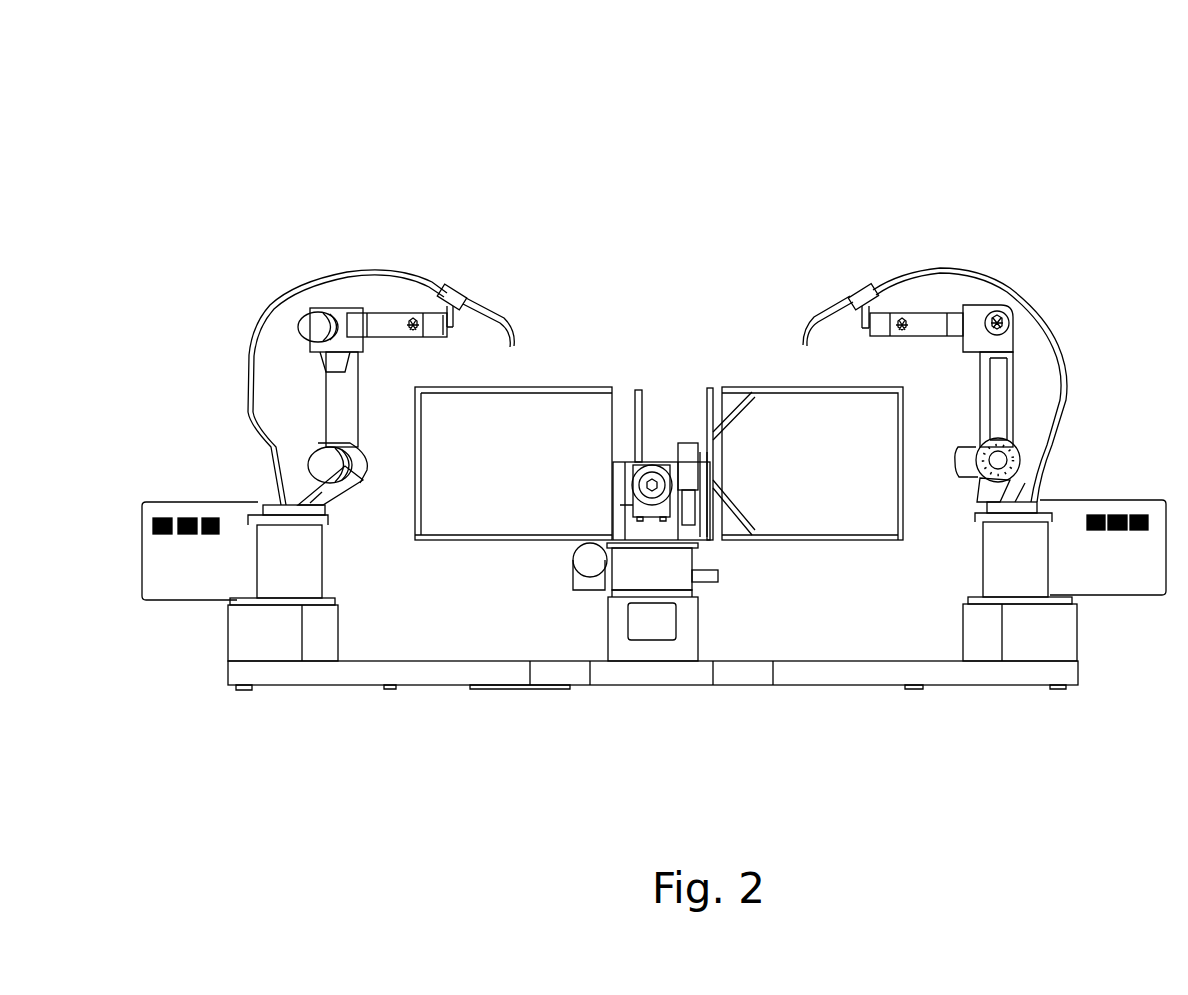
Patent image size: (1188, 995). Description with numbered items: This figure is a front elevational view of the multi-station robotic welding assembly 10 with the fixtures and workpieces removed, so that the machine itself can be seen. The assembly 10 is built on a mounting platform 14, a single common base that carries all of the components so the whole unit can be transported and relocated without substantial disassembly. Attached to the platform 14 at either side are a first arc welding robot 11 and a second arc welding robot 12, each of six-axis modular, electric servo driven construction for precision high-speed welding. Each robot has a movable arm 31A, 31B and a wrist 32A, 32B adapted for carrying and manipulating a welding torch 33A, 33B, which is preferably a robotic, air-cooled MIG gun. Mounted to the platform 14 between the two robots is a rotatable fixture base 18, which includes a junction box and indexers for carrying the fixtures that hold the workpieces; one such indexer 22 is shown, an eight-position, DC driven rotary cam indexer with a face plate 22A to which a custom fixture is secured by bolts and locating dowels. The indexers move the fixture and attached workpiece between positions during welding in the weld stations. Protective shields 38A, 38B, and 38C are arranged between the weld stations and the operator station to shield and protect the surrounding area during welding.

The multi-station robotic welding assembly 10 is at (740, 264).
The first arc welding robot 11 is at (308, 268).
The second arc welding robot 12 is at (1052, 309).
The mounting platform 14 is at (461, 652).
The rotatable fixture base 18 is at (607, 600).
The indexer 22 is at (627, 476).
The face plate 22A is at (655, 465).
The movable arm 31A is at (335, 387).
The movable arm 31B is at (1010, 398).
The wrist 32A is at (385, 312).
The wrist 32B is at (933, 318).
The welding torch 33A is at (497, 318).
The welding torch 33B is at (823, 318).
The protective shield 38A is at (534, 472).
The protective shield 38B is at (630, 390).
The protective shield 38C is at (822, 472).